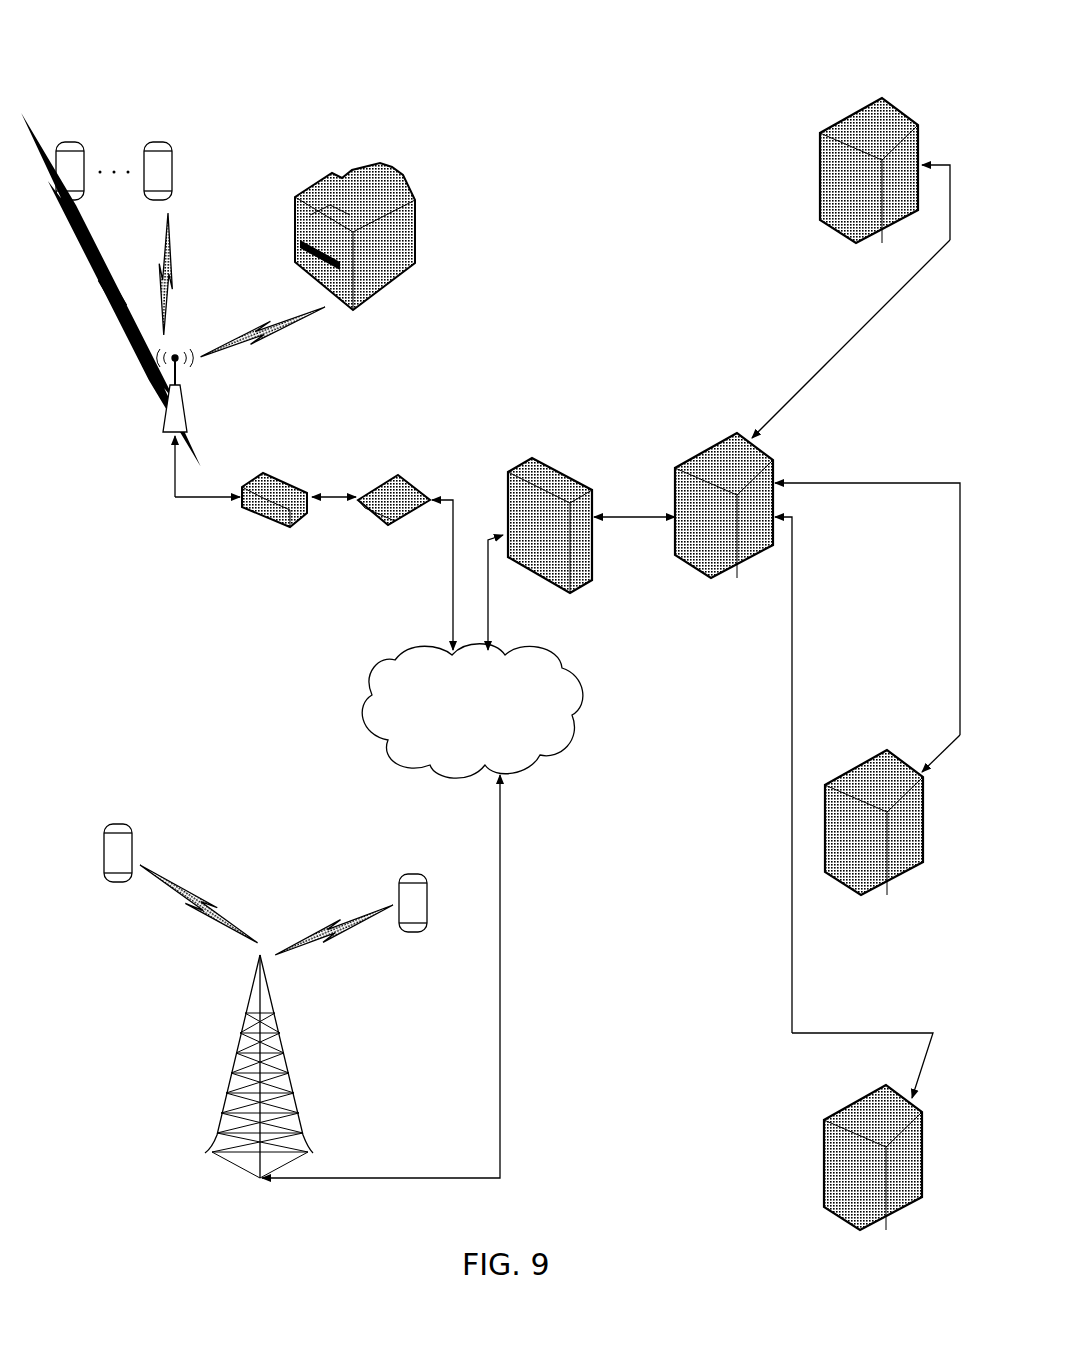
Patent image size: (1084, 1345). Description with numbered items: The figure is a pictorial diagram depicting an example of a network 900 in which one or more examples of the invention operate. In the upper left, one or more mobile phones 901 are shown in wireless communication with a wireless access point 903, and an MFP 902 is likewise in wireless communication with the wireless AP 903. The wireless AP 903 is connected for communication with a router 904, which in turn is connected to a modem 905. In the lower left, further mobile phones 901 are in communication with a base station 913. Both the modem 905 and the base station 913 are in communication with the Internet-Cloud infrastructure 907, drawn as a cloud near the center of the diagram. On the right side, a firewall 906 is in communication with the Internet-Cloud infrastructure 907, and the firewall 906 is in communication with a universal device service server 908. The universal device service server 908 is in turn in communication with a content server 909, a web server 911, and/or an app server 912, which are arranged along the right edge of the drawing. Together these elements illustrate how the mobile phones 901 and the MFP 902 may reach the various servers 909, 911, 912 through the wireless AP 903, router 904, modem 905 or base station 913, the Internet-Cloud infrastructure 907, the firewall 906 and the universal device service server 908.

The network 900 is at (188, 58).
The mobile phone 901 is at (405, 880).
The MFP 902 is at (425, 216).
The wireless access point 903 is at (248, 392).
The router 904 is at (257, 518).
The modem 905 is at (383, 527).
The firewall 906 is at (542, 460).
The Internet-Cloud infrastructure 907 is at (472, 711).
The universal device service server 908 is at (733, 433).
The content server 909 is at (813, 140).
The web server 911 is at (878, 748).
The app server 912 is at (827, 1118).
The base station 913 is at (283, 1073).